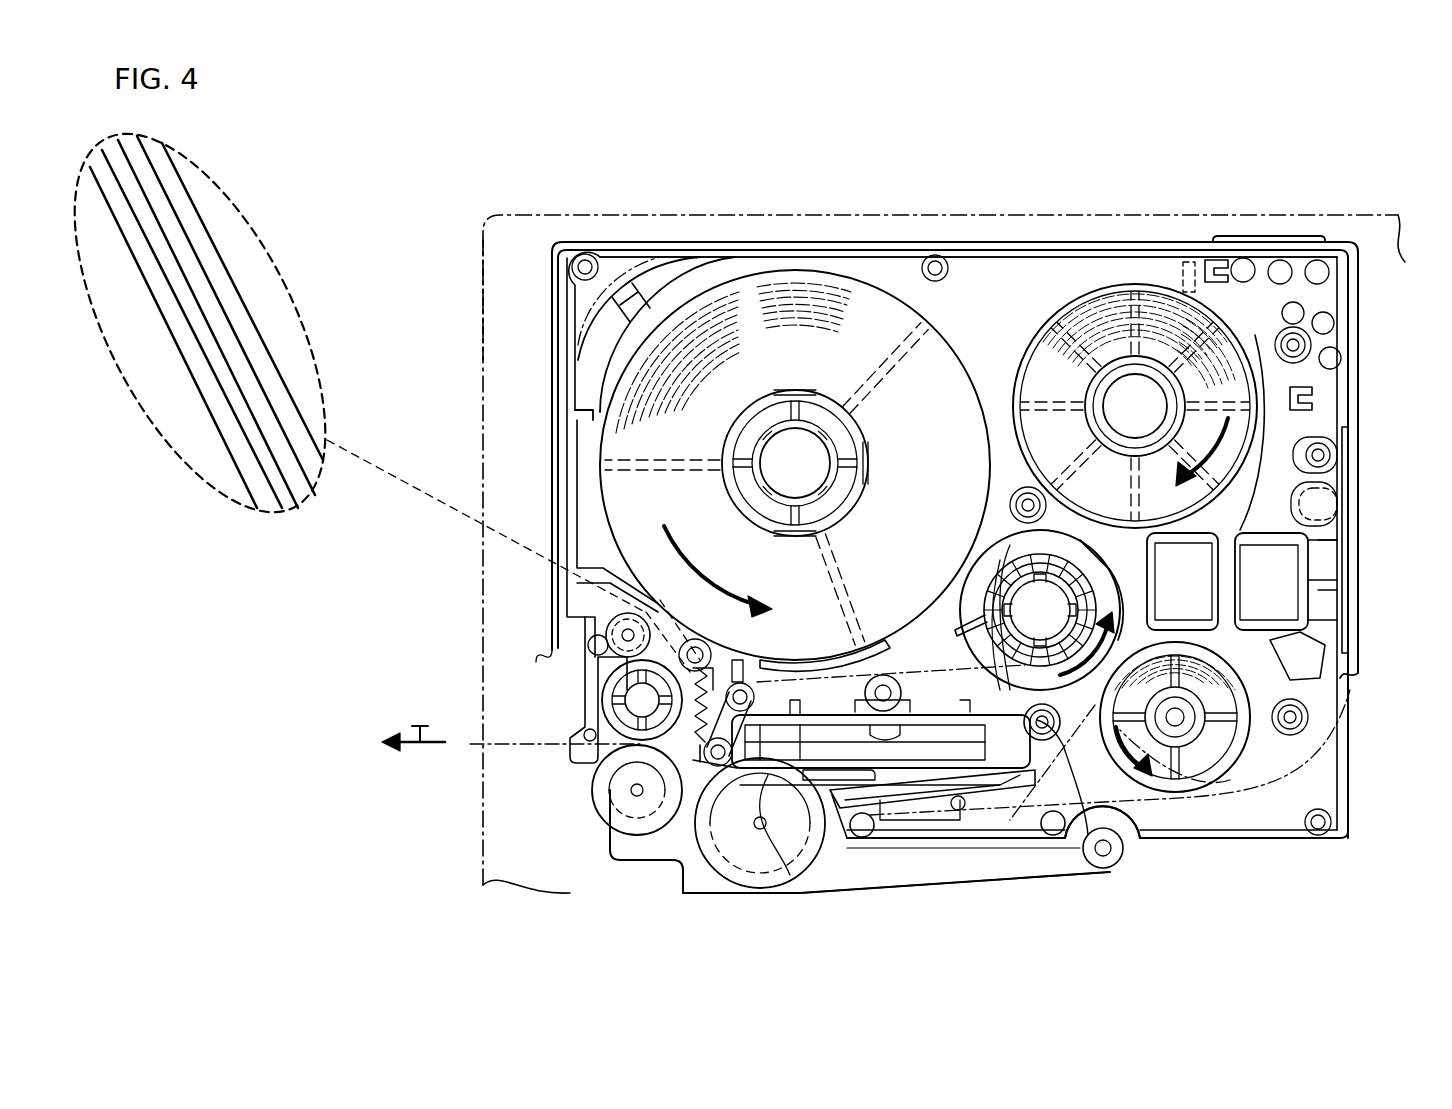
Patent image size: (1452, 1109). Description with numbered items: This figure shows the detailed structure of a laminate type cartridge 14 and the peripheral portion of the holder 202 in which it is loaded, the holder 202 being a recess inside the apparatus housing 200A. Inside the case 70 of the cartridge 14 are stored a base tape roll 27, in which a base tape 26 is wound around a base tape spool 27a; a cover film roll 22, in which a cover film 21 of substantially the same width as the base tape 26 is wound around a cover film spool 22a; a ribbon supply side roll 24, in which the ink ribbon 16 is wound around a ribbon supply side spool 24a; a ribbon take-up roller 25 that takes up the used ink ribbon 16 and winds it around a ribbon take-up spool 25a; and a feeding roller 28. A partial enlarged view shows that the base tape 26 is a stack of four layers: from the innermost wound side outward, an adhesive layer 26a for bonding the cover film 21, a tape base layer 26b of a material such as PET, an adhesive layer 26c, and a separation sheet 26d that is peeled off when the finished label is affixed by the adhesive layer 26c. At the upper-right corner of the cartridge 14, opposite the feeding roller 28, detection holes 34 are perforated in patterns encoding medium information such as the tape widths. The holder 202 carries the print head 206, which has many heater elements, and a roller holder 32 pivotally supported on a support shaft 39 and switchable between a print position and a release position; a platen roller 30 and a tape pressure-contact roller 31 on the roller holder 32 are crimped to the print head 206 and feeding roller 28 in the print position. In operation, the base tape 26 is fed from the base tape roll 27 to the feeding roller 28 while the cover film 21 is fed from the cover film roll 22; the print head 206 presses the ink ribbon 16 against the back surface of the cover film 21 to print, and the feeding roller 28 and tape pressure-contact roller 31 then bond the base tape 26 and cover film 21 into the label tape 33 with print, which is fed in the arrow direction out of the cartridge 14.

The cartridge 14 is at (1352, 457).
The ink ribbon 16 is at (1088, 835).
The cover film 21 is at (1352, 692).
The cover film roll 22 is at (1074, 296).
The cover film spool 22a is at (1122, 370).
The ribbon supply side roll 24 is at (1210, 786).
The ribbon supply side spool 24a is at (1188, 770).
The ribbon take-up roller 25 is at (1003, 532).
The ribbon take-up spool 25a is at (1000, 562).
The base tape 26 is at (615, 517).
The adhesive layer 26a is at (328, 470).
The tape base layer 26b is at (312, 500).
The adhesive layer 26c is at (298, 518).
The separation sheet 26d is at (273, 515).
The base tape roll 27 is at (915, 395).
The base tape spool 27a is at (923, 388).
The feeding roller 28 is at (600, 692).
The platen roller 30 is at (692, 885).
The tape pressure-contact roller 31 is at (592, 812).
The roller holder 32 is at (985, 880).
The label tape with print 33 is at (490, 745).
The detection holes 34 is at (1270, 236).
The support shaft 39 is at (1112, 852).
The case 70 is at (622, 244).
The apparatus housing 200A is at (483, 352).
The holder 202 is at (553, 290).
The print head 206 is at (758, 768).